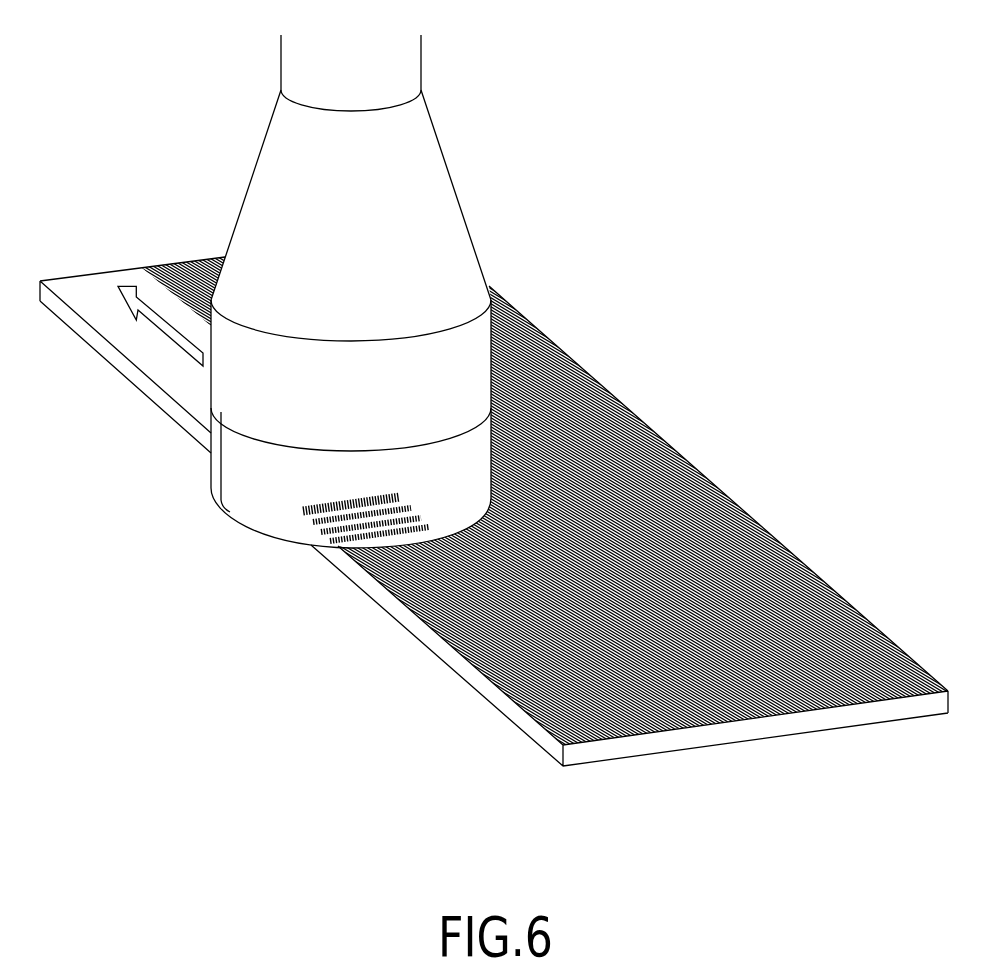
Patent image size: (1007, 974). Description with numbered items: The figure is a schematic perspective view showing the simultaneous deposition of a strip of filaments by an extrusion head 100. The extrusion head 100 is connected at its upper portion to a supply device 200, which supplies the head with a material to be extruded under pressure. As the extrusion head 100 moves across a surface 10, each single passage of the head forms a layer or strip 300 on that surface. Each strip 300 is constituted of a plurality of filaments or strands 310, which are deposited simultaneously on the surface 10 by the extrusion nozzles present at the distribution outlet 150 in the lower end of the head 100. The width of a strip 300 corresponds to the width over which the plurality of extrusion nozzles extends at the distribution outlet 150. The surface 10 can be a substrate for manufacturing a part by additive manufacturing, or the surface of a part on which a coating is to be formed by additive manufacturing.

The surface 10 is at (90, 288).
The extrusion head 100 is at (233, 455).
The distribution outlet 150 is at (333, 494).
The supply device 200 is at (413, 200).
The strip 300 is at (667, 728).
The filaments 310 is at (827, 577).